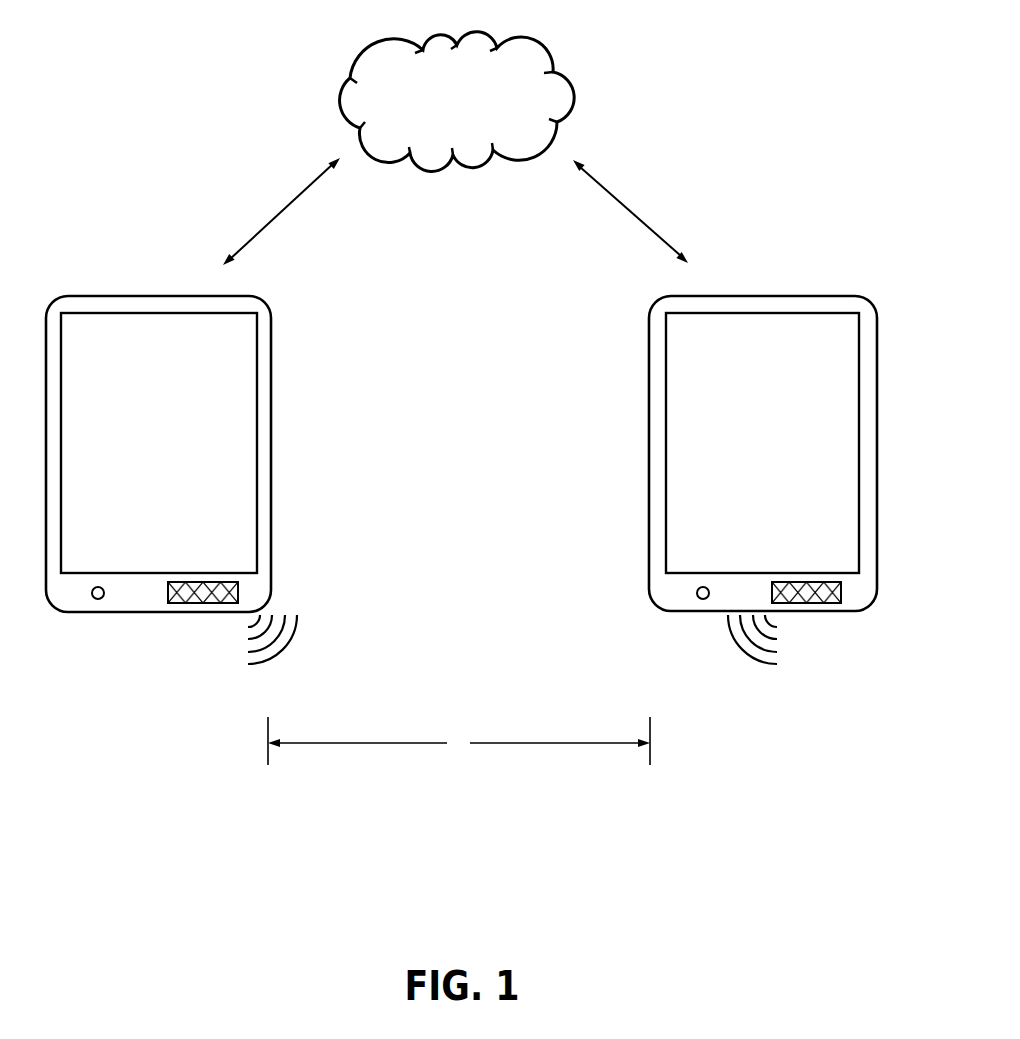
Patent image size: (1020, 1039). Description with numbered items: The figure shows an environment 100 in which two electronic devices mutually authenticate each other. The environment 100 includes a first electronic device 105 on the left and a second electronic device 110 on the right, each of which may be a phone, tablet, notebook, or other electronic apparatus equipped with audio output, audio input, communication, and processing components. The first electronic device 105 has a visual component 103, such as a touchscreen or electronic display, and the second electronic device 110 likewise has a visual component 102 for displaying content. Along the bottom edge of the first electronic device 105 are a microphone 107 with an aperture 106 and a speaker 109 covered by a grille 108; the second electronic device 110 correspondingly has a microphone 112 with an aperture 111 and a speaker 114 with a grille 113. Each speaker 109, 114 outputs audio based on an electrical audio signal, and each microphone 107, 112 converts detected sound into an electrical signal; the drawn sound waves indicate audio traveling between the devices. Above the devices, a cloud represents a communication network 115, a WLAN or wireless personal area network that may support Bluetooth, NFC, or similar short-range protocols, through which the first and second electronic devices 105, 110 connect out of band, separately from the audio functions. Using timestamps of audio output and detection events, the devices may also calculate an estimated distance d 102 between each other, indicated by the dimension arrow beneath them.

The environment 100 is at (656, 57).
The communication network 115 is at (348, 85).
The first electronic device 105 is at (110, 296).
The visual component 103 is at (137, 396).
The aperture 106 is at (100, 600).
The microphone 107 is at (97, 588).
The grille 108 is at (201, 605).
The speaker 109 is at (194, 590).
The second electronic device 110 is at (805, 296).
The visual component / estimated distance d 102 is at (742, 396).
The aperture 111 is at (705, 600).
The microphone 112 is at (700, 588).
The grille 113 is at (820, 605).
The speaker 114 is at (819, 590).